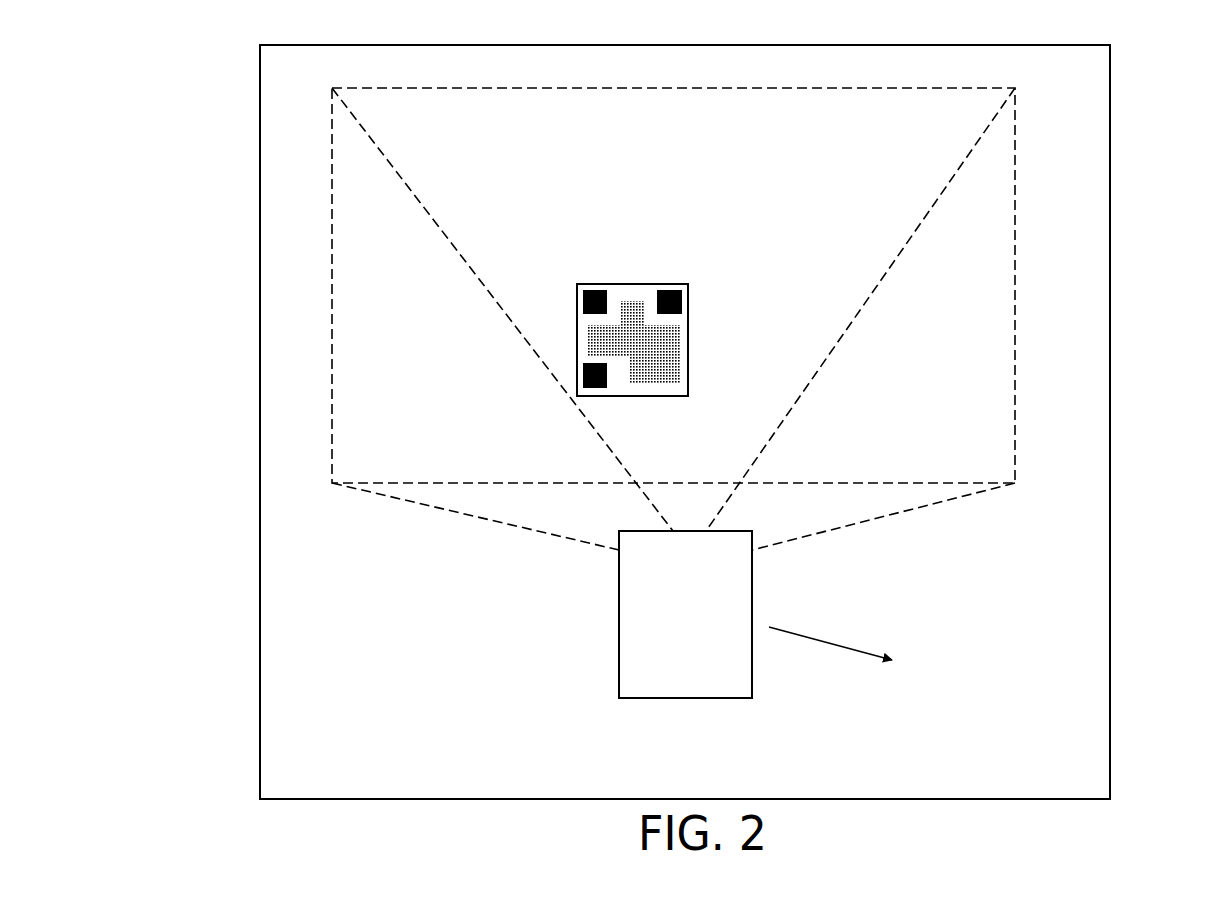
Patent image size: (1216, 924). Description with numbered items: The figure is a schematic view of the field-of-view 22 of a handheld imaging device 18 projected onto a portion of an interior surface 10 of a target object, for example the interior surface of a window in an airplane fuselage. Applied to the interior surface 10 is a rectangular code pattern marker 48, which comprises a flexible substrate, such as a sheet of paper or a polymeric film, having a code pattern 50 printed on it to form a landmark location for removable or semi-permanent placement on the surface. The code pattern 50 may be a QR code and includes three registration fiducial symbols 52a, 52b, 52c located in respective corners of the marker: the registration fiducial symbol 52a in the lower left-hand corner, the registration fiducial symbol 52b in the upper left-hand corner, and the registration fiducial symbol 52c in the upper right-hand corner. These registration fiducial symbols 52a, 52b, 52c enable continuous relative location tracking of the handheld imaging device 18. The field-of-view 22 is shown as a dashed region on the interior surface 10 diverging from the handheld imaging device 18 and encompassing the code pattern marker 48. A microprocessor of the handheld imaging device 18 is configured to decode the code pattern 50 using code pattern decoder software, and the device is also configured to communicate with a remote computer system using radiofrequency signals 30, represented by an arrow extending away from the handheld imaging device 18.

The interior surface 10 is at (260, 528).
The handheld imaging device 18 is at (619, 656).
The field-of-view 22 is at (1015, 269).
The radiofrequency signals 30 is at (840, 644).
The QR code pattern marker 48 is at (634, 390).
The code pattern 50 is at (688, 365).
The registration fiducial symbol 52a is at (593, 388).
The registration fiducial symbol 52b is at (581, 296).
The registration fiducial symbol 52c is at (684, 296).